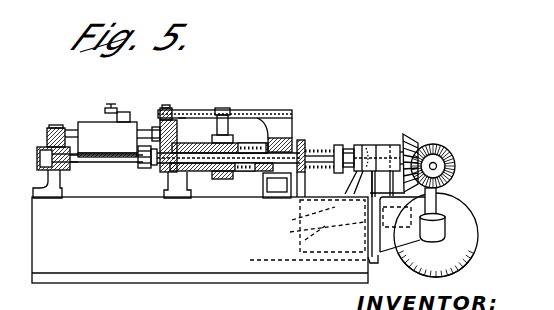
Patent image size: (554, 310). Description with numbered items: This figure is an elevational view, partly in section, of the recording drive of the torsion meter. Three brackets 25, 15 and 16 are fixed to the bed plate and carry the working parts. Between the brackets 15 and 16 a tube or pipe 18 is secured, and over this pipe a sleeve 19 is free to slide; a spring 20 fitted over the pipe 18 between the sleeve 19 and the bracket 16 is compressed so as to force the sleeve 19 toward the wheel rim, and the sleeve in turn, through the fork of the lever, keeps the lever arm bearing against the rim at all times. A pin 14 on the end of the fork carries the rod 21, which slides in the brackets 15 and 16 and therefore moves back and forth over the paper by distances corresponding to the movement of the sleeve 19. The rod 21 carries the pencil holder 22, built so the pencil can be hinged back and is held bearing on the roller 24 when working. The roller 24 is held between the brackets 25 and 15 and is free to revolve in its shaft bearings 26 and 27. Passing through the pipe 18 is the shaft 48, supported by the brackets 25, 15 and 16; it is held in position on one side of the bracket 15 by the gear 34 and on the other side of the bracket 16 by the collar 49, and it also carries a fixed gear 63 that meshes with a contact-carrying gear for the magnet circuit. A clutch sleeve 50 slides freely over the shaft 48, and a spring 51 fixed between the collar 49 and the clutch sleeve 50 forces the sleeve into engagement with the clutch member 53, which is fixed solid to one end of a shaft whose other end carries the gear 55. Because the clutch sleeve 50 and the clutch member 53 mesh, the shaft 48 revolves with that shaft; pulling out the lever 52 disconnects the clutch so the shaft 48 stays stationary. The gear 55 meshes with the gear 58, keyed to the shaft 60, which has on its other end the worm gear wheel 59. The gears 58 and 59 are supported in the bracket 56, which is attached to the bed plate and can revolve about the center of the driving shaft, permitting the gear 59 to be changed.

The pin 14 is at (230, 110).
The bracket 15 is at (173, 109).
The bracket 16 is at (268, 111).
The tube or pipe 18 is at (188, 150).
The sleeve 19 is at (243, 176).
The spring 20 is at (237, 110).
The rod 21 is at (197, 110).
The pencil holder 22 is at (120, 106).
The roller 24 is at (90, 120).
The bracket 25 is at (63, 183).
The shaft bearing 26 is at (55, 127).
The shaft bearing 27 is at (184, 110).
The gear 34 is at (144, 174).
The shaft 48 is at (198, 199).
The collar 49 is at (304, 150).
The clutch sleeve 50 is at (346, 149).
The spring 51 is at (338, 170).
The lever 52 is at (157, 283).
The clutch member 53 is at (372, 145).
The gear 55 is at (414, 143).
The bracket 56 is at (382, 263).
The gear 58 is at (456, 165).
The worm gear wheel 59 is at (462, 238).
The shaft 60 is at (438, 201).
The gear 63 is at (42, 150).